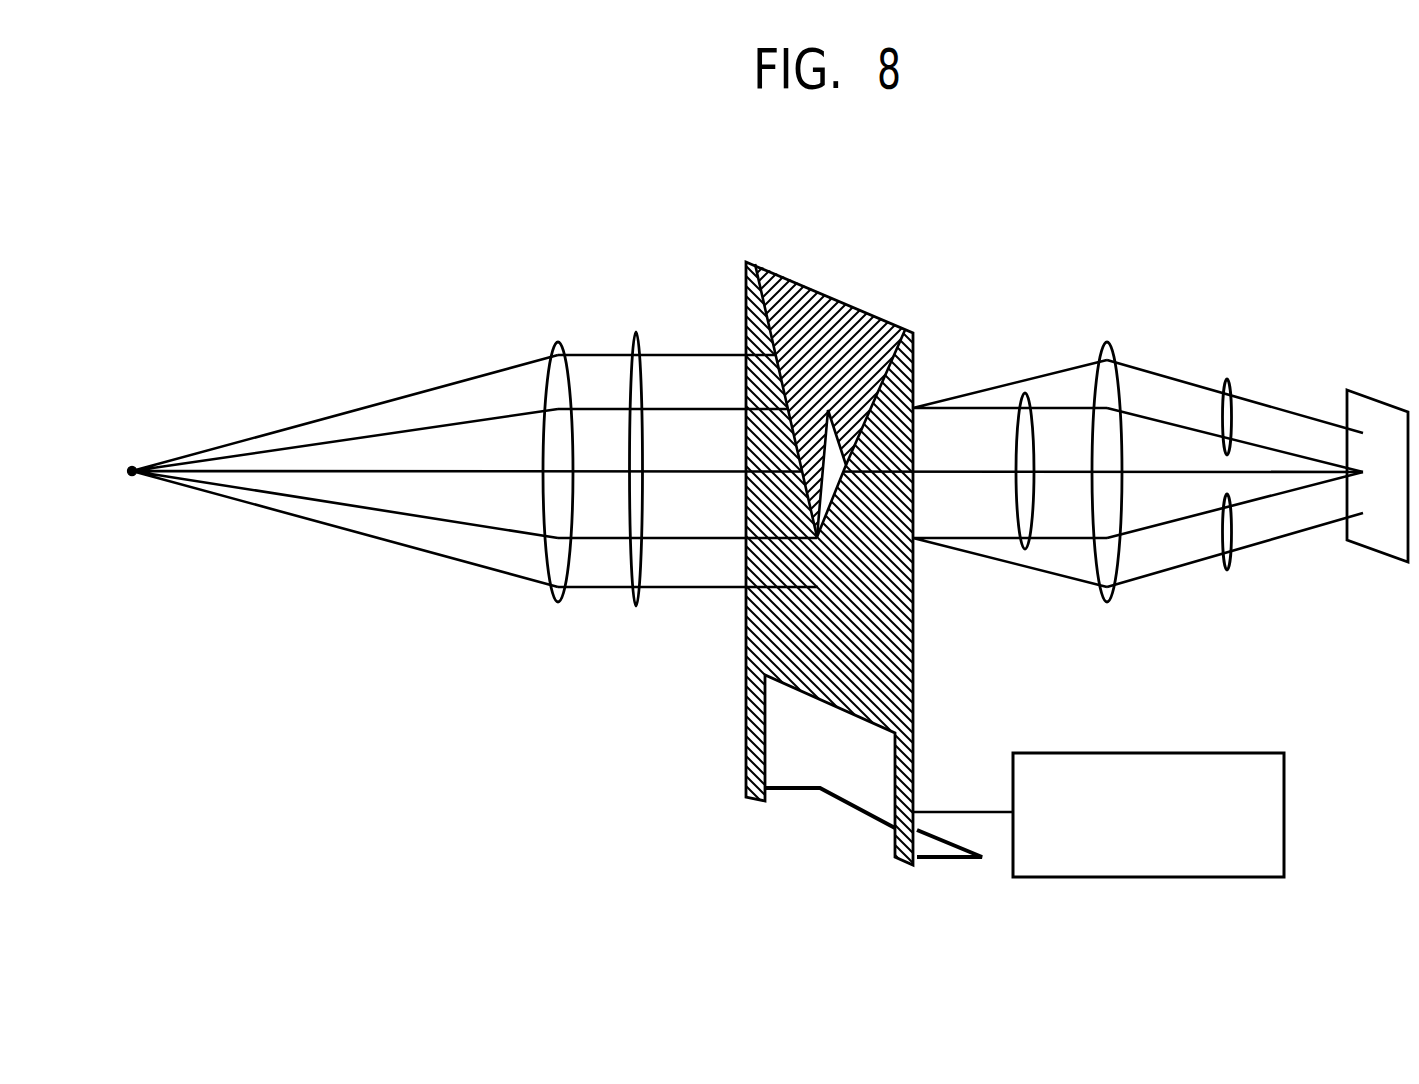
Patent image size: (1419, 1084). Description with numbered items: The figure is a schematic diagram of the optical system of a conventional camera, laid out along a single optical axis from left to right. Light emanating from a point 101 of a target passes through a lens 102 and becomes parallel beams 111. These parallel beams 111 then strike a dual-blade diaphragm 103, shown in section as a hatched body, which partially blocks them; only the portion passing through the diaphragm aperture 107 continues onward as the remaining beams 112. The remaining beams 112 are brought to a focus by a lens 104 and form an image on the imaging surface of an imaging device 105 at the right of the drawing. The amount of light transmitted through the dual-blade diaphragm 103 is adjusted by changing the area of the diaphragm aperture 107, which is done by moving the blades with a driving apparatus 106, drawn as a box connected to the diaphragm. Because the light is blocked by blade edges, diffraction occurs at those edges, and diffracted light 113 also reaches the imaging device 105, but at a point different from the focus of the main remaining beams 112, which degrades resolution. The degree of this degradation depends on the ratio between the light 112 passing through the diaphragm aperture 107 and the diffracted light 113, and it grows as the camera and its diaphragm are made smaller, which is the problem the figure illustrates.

The point of a target 101 is at (131, 467).
The lens 102 is at (558, 603).
The parallel beams 111 is at (640, 318).
The dual-blade diaphragm 103 is at (887, 536).
The diaphragm aperture 107 is at (828, 452).
The remaining beams 112 is at (1025, 392).
The lens 104 is at (1108, 603).
The diffracted light 113 is at (1229, 494).
The imaging device 105 is at (1384, 548).
The driving apparatus 106 is at (1193, 878).